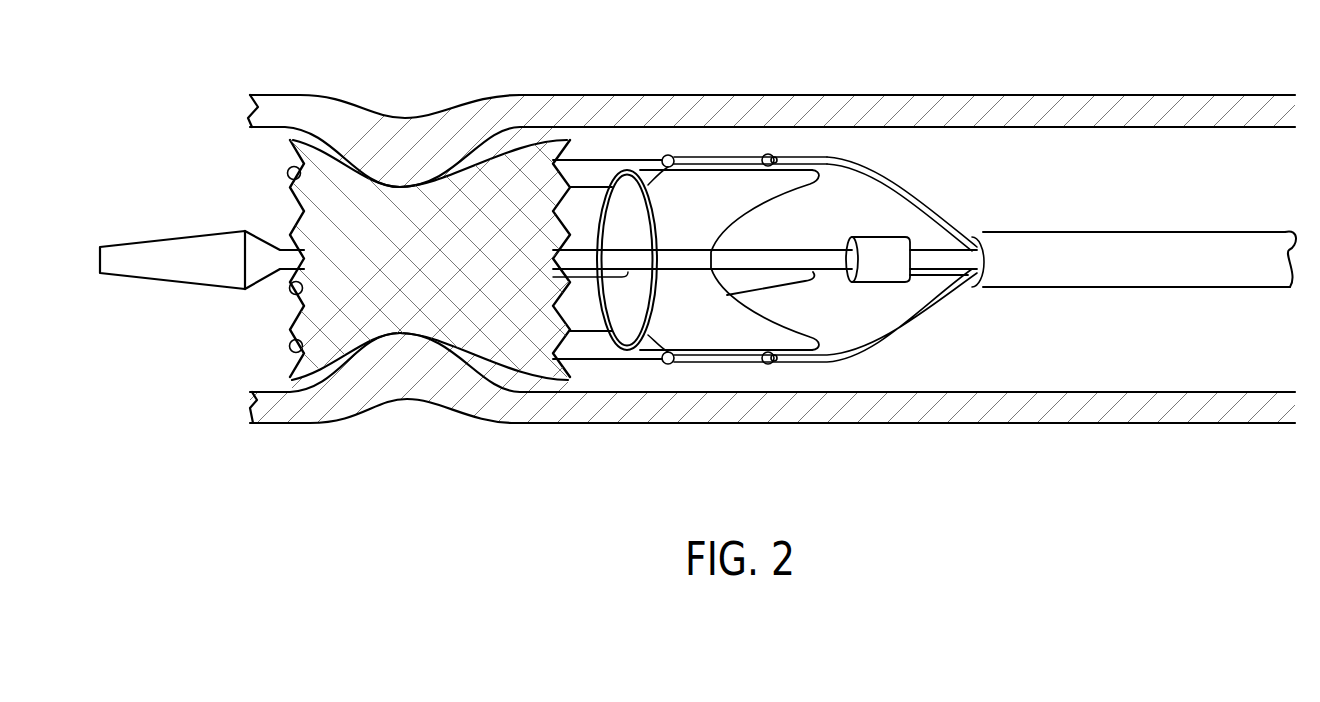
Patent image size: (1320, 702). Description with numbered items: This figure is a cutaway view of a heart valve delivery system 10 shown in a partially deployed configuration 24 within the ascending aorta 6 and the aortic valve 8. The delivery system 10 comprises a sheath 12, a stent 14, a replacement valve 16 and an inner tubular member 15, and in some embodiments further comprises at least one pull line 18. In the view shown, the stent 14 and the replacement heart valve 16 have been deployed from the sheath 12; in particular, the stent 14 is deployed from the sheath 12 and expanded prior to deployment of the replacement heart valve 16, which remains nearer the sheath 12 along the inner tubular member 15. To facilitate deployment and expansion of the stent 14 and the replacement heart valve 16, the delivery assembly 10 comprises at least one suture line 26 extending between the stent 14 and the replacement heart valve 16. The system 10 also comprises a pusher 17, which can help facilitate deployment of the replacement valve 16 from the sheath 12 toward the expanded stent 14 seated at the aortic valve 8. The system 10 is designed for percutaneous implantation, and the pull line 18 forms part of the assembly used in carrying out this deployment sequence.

The ascending aorta 6 is at (940, 95).
The aortic valve 8 is at (415, 145).
The heart valve delivery system 10 is at (924, 213).
The sheath 12 is at (1142, 242).
The stent 14 is at (568, 147).
The inner tubular member 15 is at (940, 262).
The replacement valve 16 is at (697, 188).
The pusher 17 is at (882, 273).
The pull line 18 is at (915, 192).
The partially deployed configuration 24 is at (860, 146).
The suture line 26 is at (600, 157).